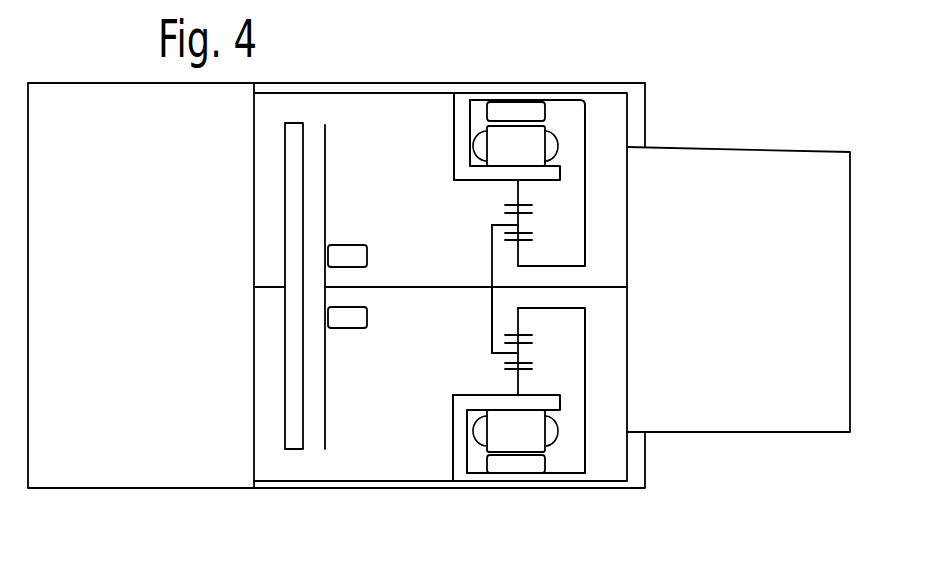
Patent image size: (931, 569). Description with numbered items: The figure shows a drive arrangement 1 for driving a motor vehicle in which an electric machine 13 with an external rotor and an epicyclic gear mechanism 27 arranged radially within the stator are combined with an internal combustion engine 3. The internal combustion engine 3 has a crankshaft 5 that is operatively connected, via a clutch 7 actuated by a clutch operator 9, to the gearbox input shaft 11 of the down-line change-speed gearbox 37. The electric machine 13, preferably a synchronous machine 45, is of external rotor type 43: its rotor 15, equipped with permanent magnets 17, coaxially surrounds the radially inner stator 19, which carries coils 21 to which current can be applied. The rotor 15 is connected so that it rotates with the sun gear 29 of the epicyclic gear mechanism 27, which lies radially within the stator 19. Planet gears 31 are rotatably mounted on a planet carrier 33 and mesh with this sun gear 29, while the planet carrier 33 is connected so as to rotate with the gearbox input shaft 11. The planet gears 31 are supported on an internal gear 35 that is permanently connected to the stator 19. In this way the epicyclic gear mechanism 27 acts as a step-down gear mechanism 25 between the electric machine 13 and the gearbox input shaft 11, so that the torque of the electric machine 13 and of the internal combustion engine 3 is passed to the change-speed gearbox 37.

The drive arrangement 1 is at (107, 65).
The internal combustion engine 3 is at (97, 467).
The crankshaft 5 is at (270, 289).
The clutch 7 is at (293, 450).
The clutch operator 9 is at (348, 318).
The gearbox input shaft 11 is at (603, 292).
The electric machine 13 is at (556, 428).
The rotor 15 is at (515, 467).
The permanent magnets 17 is at (505, 108).
The stator 19 is at (478, 450).
The coils 21 is at (477, 441).
The step-down gear mechanism 25 is at (528, 203).
The epicyclic gear mechanism 27 is at (491, 267).
The sun gear 29 is at (515, 258).
The planet gears 31 is at (520, 227).
The planet carrier 33 is at (491, 332).
The internal gear 35 is at (522, 194).
The change-speed gearbox 37 is at (758, 412).
The external rotor type 43 is at (480, 114).
The synchronous machine 45 is at (553, 425).